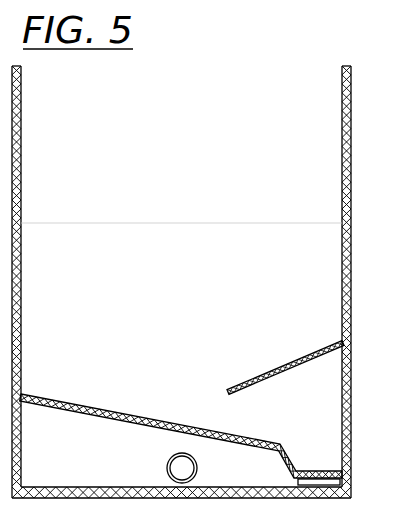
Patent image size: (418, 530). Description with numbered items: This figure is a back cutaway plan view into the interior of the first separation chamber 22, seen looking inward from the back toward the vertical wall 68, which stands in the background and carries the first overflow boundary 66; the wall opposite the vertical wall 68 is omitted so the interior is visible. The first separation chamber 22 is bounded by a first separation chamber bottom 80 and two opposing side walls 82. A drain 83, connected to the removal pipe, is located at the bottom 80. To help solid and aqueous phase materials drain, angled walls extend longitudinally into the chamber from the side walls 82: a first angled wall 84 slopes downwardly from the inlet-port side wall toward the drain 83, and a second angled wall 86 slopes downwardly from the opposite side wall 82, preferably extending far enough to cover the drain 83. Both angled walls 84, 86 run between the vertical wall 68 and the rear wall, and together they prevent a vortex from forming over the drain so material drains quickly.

The first separation chamber 22 is at (181, 282).
The first overflow boundary 66 is at (272, 222).
The vertical wall 68 is at (188, 345).
The side walls 82 is at (22, 292).
The first angled wall 84 is at (100, 406).
The second angled wall 86 is at (265, 376).
The first separation chamber bottom 80 is at (322, 470).
The drain 83 is at (338, 463).